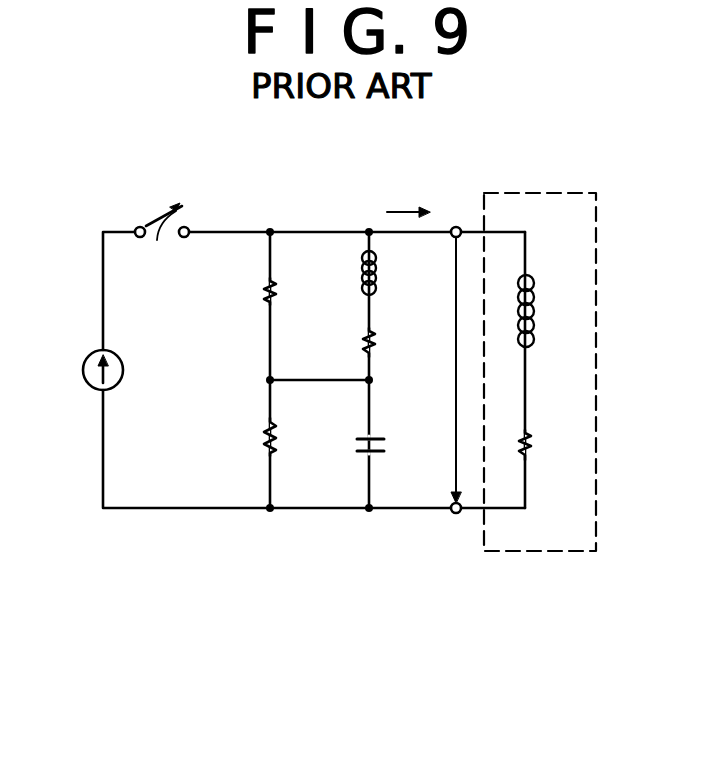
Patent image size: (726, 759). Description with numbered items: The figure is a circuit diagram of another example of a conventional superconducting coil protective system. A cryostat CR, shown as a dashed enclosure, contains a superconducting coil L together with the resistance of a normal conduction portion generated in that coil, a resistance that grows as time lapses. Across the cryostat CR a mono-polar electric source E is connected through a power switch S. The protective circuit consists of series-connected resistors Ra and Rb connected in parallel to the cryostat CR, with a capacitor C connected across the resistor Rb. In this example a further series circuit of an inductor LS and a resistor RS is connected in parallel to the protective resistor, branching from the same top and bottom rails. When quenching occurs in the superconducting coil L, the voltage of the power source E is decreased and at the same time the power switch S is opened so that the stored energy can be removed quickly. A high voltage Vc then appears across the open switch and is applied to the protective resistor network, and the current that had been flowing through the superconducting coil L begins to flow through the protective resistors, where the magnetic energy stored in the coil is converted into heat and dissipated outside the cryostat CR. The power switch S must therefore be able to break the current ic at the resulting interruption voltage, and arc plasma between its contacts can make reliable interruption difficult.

The power switch S is at (162, 208).
The mono-polar electric source E is at (82, 373).
The resistor Ra is at (293, 293).
The resistor Rb is at (292, 437).
The inductor LS is at (392, 273).
The resistor RS is at (394, 343).
The capacitor C is at (384, 445).
The high voltage Vc is at (435, 370).
The current ic is at (408, 198).
The superconducting coil L is at (540, 311).
The cryostat CR is at (537, 193).